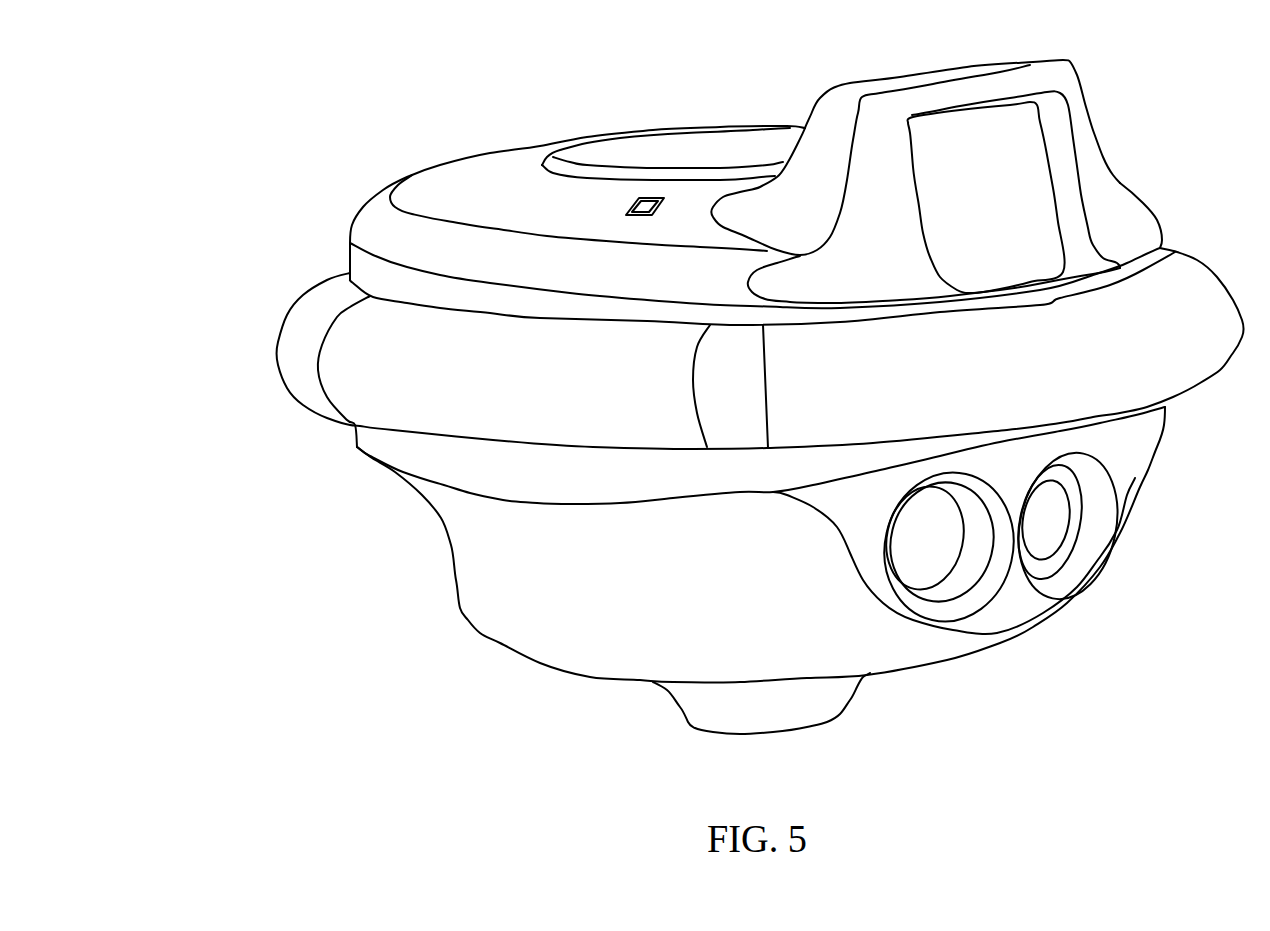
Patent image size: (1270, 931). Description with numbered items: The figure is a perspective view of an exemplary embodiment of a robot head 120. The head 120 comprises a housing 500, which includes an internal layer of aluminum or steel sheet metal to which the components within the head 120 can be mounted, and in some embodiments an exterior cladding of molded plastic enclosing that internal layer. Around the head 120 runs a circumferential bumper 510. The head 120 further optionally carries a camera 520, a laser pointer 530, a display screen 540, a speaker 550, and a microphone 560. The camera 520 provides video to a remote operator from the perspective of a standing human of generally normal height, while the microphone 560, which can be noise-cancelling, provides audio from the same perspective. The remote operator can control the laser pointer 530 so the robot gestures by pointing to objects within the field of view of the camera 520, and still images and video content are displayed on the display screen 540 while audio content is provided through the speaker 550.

The head 120 is at (305, 144).
The housing 500 is at (462, 608).
The circumferential bumper 510 is at (302, 303).
The camera 520 is at (1047, 520).
The laser pointer 530 is at (933, 543).
The display screen 540 is at (1030, 160).
The speaker 550 is at (700, 140).
The microphone 560 is at (647, 203).